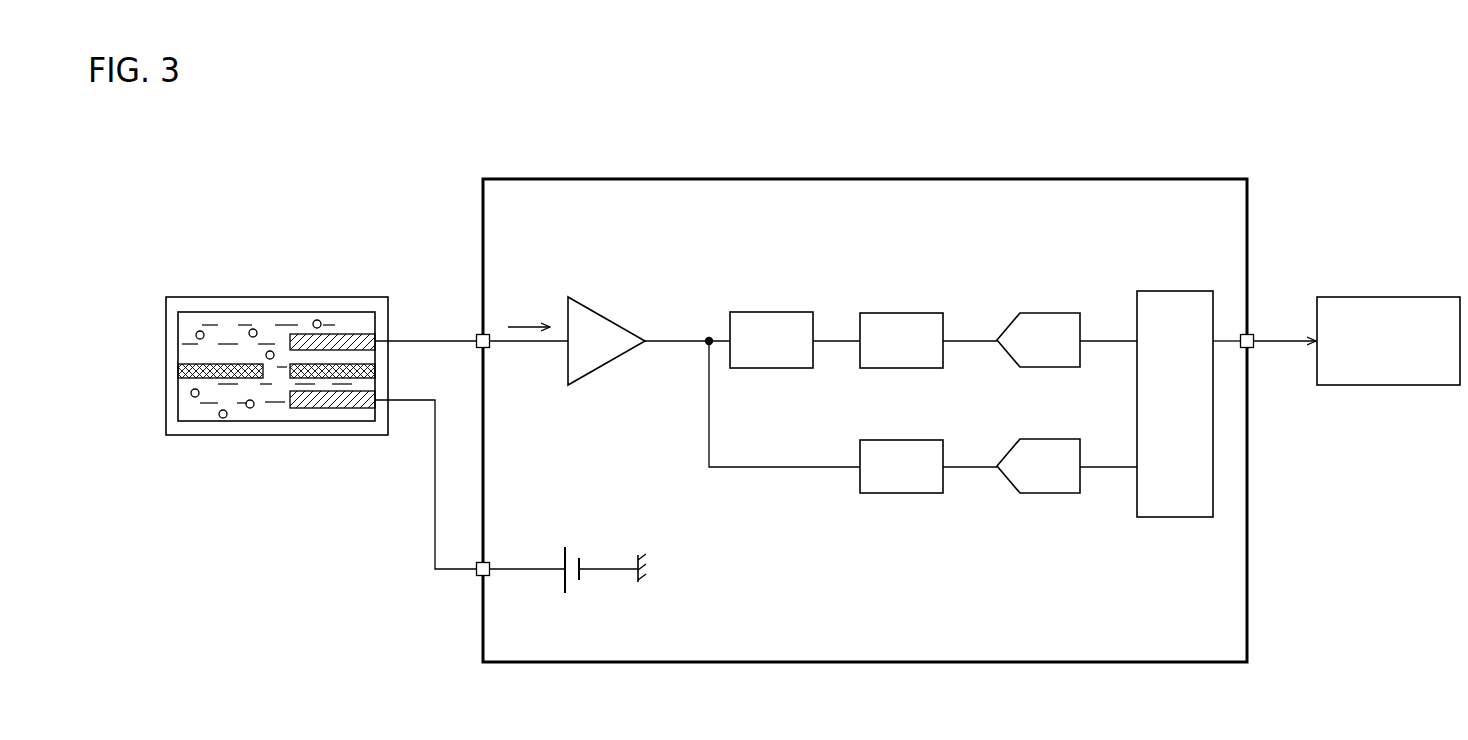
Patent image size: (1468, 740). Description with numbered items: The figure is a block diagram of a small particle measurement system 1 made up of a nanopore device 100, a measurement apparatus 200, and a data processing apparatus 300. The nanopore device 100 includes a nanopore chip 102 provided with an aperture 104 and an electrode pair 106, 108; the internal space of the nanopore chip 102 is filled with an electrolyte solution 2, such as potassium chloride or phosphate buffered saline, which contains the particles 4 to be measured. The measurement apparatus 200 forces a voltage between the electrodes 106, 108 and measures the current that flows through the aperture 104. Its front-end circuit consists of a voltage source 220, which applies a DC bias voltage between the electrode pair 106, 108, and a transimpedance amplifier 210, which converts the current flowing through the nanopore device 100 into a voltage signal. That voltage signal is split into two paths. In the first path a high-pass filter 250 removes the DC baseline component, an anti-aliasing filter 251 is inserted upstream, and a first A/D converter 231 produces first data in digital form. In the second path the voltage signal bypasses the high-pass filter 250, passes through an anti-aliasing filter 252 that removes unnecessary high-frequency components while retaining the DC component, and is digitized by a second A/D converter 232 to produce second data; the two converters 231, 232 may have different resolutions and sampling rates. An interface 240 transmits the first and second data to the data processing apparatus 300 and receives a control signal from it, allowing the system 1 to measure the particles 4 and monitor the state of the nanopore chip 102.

The small particle measurement system 1 is at (1290, 102).
The electrolyte solution 2 is at (220, 323).
The particles 4 is at (270, 351).
The nanopore device 100 is at (323, 297).
The nanopore chip 102 is at (178, 372).
The aperture 104 is at (283, 379).
The electrode 106 is at (357, 331).
The electrode 108 is at (348, 408).
The measurement apparatus 200 is at (788, 178).
The transimpedance amplifier 210 is at (607, 313).
The voltage source 220 is at (580, 545).
The first A/D converter 231 is at (1047, 312).
The second A/D converter 232 is at (1047, 438).
The interface 240 is at (1173, 291).
The high-pass filter 250 is at (772, 312).
The anti-aliasing filter 251 is at (903, 312).
The anti-aliasing filter 252 is at (903, 439).
The data processing apparatus 300 is at (1400, 297).